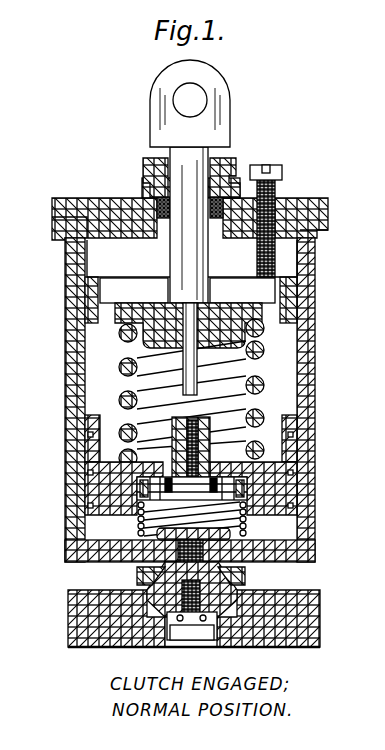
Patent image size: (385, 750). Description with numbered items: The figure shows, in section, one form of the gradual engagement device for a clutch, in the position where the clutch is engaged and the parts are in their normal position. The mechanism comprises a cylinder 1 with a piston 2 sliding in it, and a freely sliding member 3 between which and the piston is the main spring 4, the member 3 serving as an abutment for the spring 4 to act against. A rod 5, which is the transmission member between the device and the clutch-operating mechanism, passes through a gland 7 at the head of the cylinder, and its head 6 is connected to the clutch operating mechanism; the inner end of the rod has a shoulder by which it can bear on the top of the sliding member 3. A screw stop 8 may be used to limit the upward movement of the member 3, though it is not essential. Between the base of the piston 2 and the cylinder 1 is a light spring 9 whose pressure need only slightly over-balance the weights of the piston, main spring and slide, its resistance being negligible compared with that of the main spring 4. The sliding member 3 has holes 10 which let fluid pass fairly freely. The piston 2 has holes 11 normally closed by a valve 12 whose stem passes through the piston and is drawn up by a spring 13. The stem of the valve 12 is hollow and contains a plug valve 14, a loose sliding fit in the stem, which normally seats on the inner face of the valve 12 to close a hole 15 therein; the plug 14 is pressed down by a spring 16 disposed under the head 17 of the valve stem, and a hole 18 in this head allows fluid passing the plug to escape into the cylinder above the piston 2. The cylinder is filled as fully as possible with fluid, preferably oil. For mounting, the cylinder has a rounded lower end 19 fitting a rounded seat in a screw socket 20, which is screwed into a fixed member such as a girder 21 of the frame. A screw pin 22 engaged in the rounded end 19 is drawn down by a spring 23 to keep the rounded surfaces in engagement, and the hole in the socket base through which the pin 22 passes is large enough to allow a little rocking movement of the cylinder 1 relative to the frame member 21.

The cylinder 1 is at (82, 345).
The piston 2 is at (263, 498).
The freely sliding member 3 is at (280, 313).
The main spring 4 is at (263, 350).
The rod 5 is at (190, 252).
The head 6 is at (217, 90).
The gland 7 is at (152, 157).
The screw stop 8 is at (277, 260).
The light spring 9 is at (140, 515).
The holes 10 is at (107, 308).
The holes 11 is at (215, 443).
The valve 12 is at (230, 470).
The spring 13 is at (147, 442).
The plug valve 14 is at (143, 480).
The hole 15 is at (67, 563).
The spring 16 is at (213, 420).
The head 17 is at (172, 427).
The hole 18 is at (182, 413).
The rounded lower end 19 is at (315, 547).
The screw socket 20 is at (78, 593).
The girder 21 is at (240, 590).
The screw pin 22 is at (200, 630).
The spring 23 is at (82, 617).